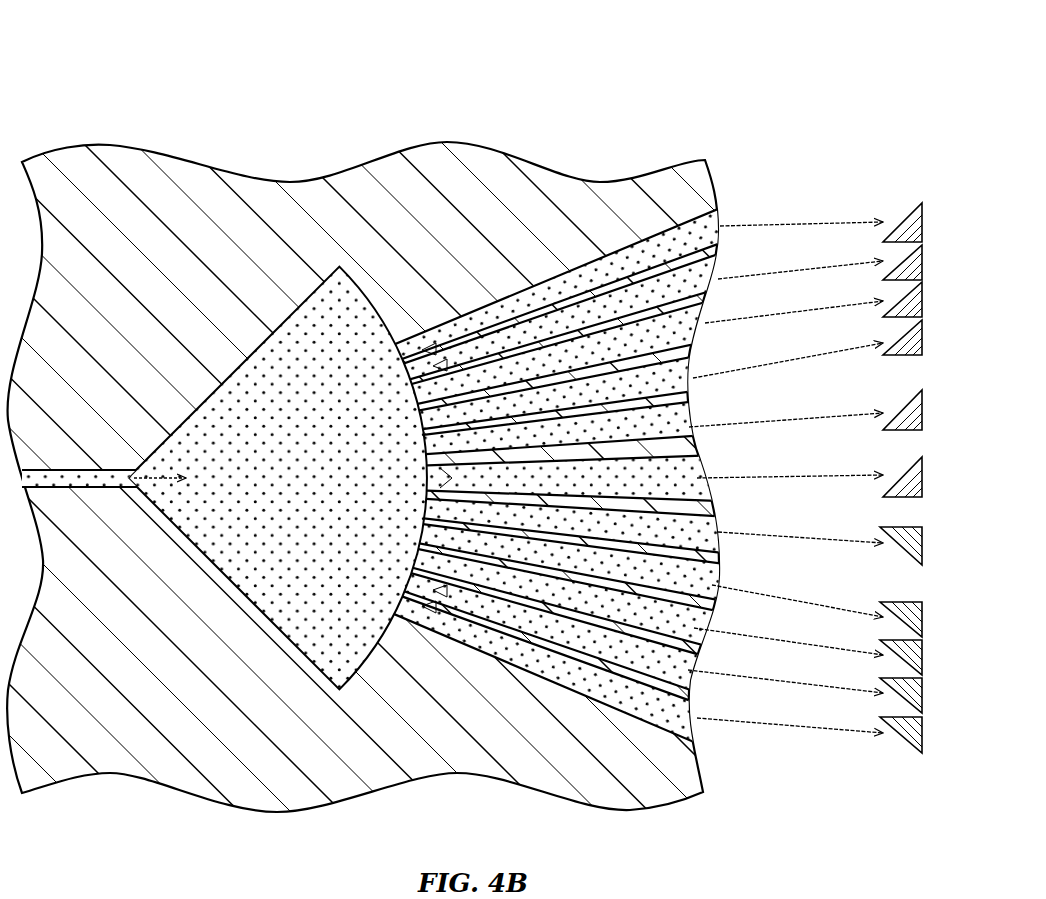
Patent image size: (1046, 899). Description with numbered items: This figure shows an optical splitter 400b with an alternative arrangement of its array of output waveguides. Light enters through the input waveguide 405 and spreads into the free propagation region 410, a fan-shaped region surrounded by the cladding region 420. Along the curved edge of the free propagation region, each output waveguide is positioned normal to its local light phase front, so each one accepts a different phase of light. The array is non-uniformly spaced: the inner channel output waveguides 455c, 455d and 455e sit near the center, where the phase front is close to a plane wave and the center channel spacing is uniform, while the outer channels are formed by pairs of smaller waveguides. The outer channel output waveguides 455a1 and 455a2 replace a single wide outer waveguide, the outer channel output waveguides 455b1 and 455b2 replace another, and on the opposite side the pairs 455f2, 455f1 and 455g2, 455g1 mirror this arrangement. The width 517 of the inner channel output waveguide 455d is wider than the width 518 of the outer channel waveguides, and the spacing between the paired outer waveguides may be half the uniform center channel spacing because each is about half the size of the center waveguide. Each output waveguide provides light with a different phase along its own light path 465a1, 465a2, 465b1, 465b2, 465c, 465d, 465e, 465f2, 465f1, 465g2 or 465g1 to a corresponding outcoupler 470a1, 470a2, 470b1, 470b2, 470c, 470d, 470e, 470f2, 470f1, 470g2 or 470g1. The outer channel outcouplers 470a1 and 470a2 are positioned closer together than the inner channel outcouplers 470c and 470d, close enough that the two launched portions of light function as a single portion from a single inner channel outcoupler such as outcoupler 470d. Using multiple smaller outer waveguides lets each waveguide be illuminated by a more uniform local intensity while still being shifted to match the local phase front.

The optical coupling system 400b is at (63, 62).
The input waveguide 405 is at (45, 468).
The free propagation region 410 is at (352, 293).
The cladding region 420 is at (192, 177).
The outer channel output waveguide 455a1 is at (719, 213).
The outer channel output waveguide 455a2 is at (714, 298).
The outer channel output waveguide 455b1 is at (704, 340).
The outer channel output waveguide 455b2 is at (692, 396).
The output waveguide 455c is at (690, 443).
The inner channel output waveguide 455d is at (705, 497).
The output waveguide 455e is at (719, 552).
The output waveguide 455f2 is at (712, 601).
The output waveguide 455f1 is at (694, 649).
The outer channel waveguide 455g2 is at (688, 695).
The outer channel waveguide 455g1 is at (697, 741).
The light path 465a1 is at (813, 221).
The light path 465a2 is at (798, 270).
The light path 465b1 is at (800, 312).
The light path 465b2 is at (778, 362).
The light path 465c is at (796, 418).
The light path 465d is at (795, 474).
The light path 465e is at (836, 537).
The light path 465f2 is at (814, 602).
The light path 465f1 is at (796, 640).
The light path 465g2 is at (786, 683).
The light path 465g1 is at (800, 740).
The outcoupler 470a1 is at (893, 227).
The outcoupler 470a2 is at (890, 258).
The outcoupler 470b1 is at (891, 296).
The outcoupler 470b2 is at (891, 337).
The outcoupler 470c is at (898, 412).
The outcoupler 470d is at (897, 481).
The outcoupler 470e is at (904, 549).
The outcoupler 470f2 is at (891, 622).
The outcoupler 470f1 is at (893, 662).
The outcoupler 470g2 is at (892, 700).
The outcoupler 470g1 is at (903, 746).
The width 517 is at (447, 472).
The width 518 is at (427, 349).